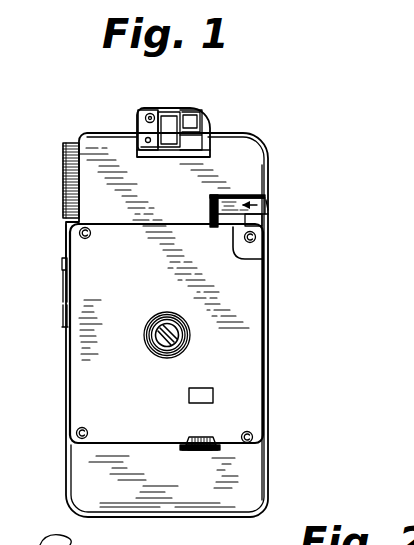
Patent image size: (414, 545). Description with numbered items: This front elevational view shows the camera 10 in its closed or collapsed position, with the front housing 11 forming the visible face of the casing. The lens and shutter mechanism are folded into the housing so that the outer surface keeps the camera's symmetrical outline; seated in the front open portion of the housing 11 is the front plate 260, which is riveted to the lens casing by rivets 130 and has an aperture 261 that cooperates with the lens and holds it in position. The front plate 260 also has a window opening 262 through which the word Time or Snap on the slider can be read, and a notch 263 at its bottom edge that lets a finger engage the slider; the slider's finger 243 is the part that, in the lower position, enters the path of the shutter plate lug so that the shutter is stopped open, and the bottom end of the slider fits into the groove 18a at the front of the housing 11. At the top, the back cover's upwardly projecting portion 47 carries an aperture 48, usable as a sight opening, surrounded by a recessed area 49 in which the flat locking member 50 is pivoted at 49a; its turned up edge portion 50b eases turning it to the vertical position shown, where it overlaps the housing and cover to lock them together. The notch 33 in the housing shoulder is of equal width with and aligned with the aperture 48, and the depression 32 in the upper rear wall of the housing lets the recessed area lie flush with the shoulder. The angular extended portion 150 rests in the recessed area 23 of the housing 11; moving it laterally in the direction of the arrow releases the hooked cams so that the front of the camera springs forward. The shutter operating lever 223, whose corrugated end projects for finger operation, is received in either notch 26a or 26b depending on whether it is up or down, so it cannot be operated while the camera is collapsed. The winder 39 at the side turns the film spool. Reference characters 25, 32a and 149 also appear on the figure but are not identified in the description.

The camera 10 is at (292, 222).
The front housing 11 is at (62, 382).
The groove 18a is at (203, 451).
The recessed area 23 is at (210, 212).
The side wall of body 25 is at (268, 215).
The notch 26a is at (62, 327).
The notch 26b is at (62, 277).
The depression 32 is at (193, 158).
The viewfinder housing wall 32a is at (177, 143).
The notch 33 is at (183, 139).
The winder 39 is at (62, 160).
The upwardly projecting portion 47 is at (167, 113).
The aperture 48 is at (174, 140).
The recessed area 49 is at (150, 113).
The pivot 49a is at (146, 111).
The locking member 50 is at (143, 128).
The turned up edge portion 50b is at (162, 148).
The rivets 130 is at (78, 438).
The bracket 149 is at (267, 259).
The angular extended portion 150 is at (268, 207).
The operating lever 223 is at (67, 263).
The finger 243 is at (193, 451).
The front plate 260 is at (250, 318).
The aperture 261 is at (178, 343).
The window opening 262 is at (210, 403).
The notch 263 is at (214, 437).